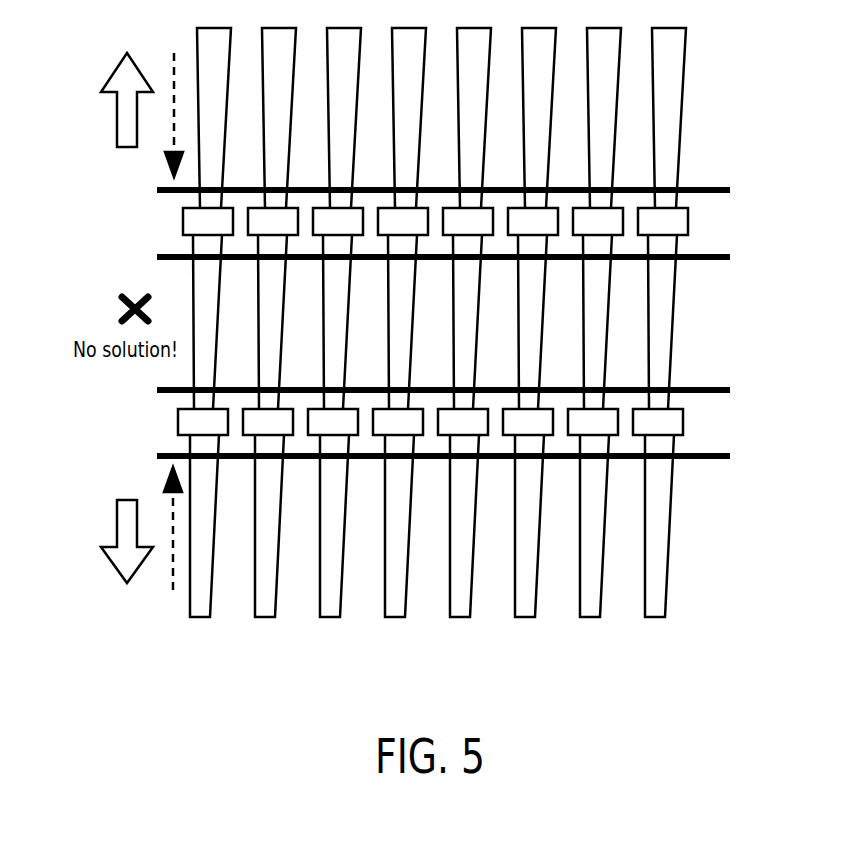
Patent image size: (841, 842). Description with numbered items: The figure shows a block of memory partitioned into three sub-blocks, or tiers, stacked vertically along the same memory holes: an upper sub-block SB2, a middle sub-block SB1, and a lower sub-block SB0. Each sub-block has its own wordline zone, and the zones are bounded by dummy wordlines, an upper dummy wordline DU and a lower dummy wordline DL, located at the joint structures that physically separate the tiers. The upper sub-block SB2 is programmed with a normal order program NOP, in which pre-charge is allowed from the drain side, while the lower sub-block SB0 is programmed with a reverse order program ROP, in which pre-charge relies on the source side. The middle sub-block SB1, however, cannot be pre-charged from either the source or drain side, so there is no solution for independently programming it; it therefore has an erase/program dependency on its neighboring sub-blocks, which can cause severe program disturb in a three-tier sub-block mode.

The sub-block 2 SB2 is at (740, 55).
The sub-block 1 SB1 is at (740, 257).
The sub-block 0 SB0 is at (740, 458).
The upper dummy wordline DU is at (443, 277).
The lower dummy wordline DL is at (443, 372).
The normal order program NOP is at (118, 97).
The reverse order program ROP is at (119, 542).